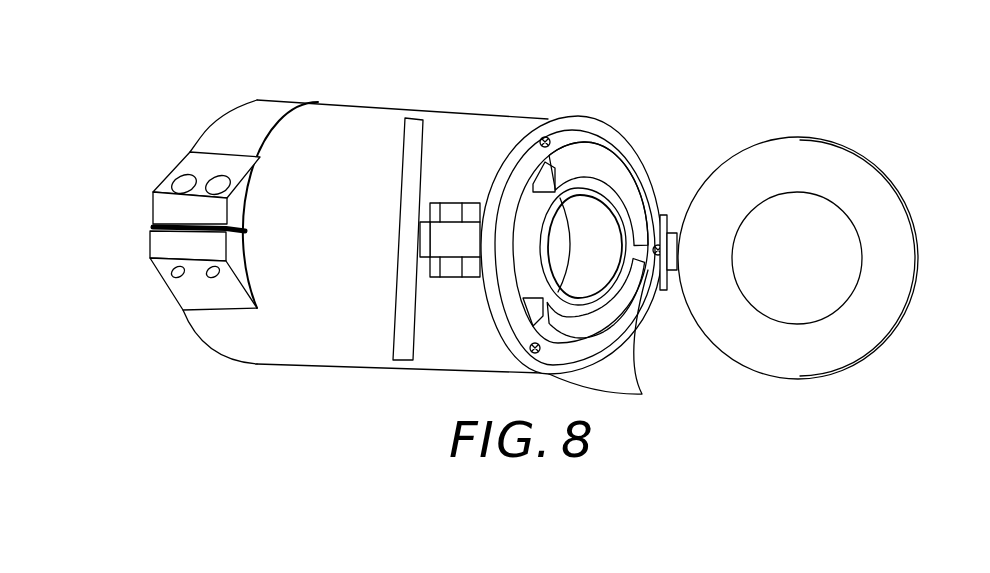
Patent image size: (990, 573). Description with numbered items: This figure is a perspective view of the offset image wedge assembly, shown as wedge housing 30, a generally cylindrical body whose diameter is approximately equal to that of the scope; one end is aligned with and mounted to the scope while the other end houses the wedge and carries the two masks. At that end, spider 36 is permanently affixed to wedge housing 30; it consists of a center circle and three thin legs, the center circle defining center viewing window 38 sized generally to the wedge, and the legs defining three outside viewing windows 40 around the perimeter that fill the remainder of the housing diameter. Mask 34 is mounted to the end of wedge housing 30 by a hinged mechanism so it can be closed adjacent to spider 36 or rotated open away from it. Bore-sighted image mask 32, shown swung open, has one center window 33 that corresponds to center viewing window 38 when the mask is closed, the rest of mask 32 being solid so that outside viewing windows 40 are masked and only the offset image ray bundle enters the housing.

The wedge housing 30 is at (352, 73).
The bore-sighted image mask 32 is at (872, 188).
The center window 33 is at (847, 262).
The mask 34 is at (400, 342).
The spider 36 is at (592, 132).
The center viewing window 38 is at (560, 242).
The outside viewing windows 40 is at (580, 333).